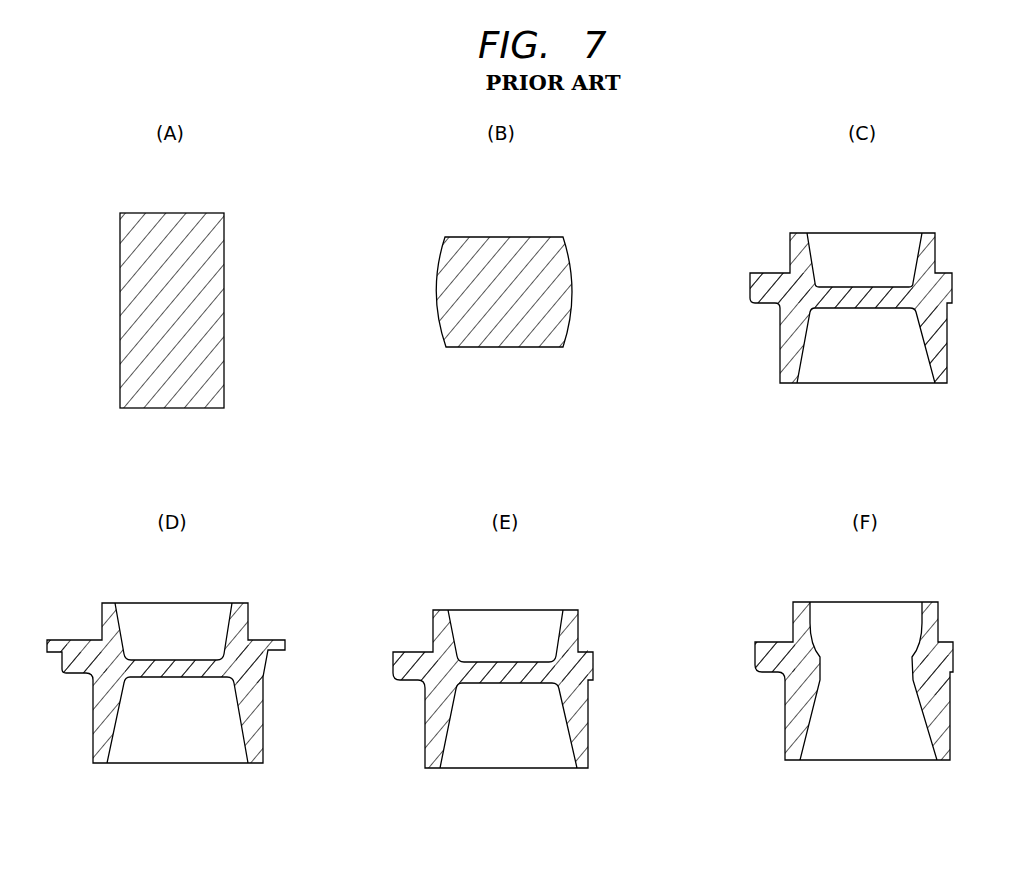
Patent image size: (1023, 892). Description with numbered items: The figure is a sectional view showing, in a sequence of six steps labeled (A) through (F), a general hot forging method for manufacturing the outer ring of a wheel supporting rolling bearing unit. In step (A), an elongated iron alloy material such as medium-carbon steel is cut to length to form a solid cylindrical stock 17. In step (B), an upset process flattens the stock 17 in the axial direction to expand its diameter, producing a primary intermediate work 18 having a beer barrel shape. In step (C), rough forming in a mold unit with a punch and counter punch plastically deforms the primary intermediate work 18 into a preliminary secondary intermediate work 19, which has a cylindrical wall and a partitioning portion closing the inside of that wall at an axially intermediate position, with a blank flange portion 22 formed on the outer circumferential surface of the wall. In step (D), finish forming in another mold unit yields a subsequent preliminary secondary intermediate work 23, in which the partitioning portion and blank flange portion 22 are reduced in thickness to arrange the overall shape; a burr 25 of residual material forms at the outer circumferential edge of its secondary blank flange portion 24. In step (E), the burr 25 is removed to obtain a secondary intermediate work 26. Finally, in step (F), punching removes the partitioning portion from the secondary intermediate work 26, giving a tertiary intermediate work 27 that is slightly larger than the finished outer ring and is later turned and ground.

The stock 17 is at (205, 232).
The primary intermediate work 18 is at (553, 252).
The preliminary secondary intermediate work 19 is at (944, 308).
The blank flange portion 22 is at (760, 293).
The subsequent preliminary secondary intermediate work 23 is at (247, 682).
The secondary blank flange portion 24 is at (67, 668).
The burr 25 is at (53, 645).
The secondary intermediate work 26 is at (583, 683).
The tertiary intermediate work 27 is at (928, 611).